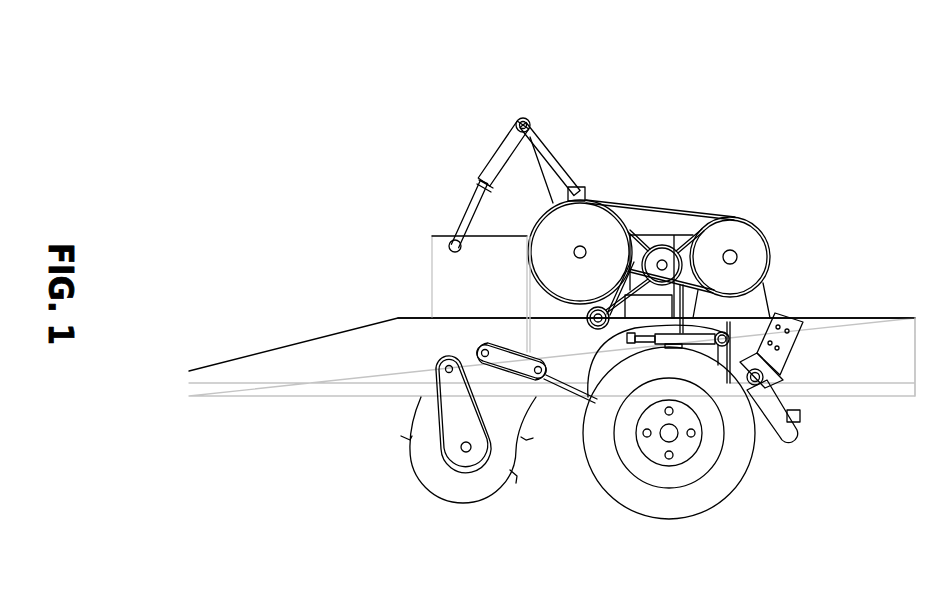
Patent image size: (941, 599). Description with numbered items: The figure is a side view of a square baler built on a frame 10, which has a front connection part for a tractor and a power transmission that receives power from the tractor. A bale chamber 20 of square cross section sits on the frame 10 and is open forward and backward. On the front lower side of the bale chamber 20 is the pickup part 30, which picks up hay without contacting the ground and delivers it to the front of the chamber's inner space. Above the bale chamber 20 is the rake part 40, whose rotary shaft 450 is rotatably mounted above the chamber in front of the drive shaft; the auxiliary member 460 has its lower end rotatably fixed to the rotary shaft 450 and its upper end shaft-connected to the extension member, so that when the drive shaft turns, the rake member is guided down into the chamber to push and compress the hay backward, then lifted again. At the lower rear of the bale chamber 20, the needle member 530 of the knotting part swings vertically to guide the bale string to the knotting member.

The frame 10 is at (348, 388).
The bale chamber 20 is at (873, 318).
The pickup part 30 is at (449, 492).
The rake part 40 is at (548, 147).
The rotary shaft 450 is at (452, 244).
The auxiliary member 460 is at (498, 147).
The needle member 530 is at (760, 425).